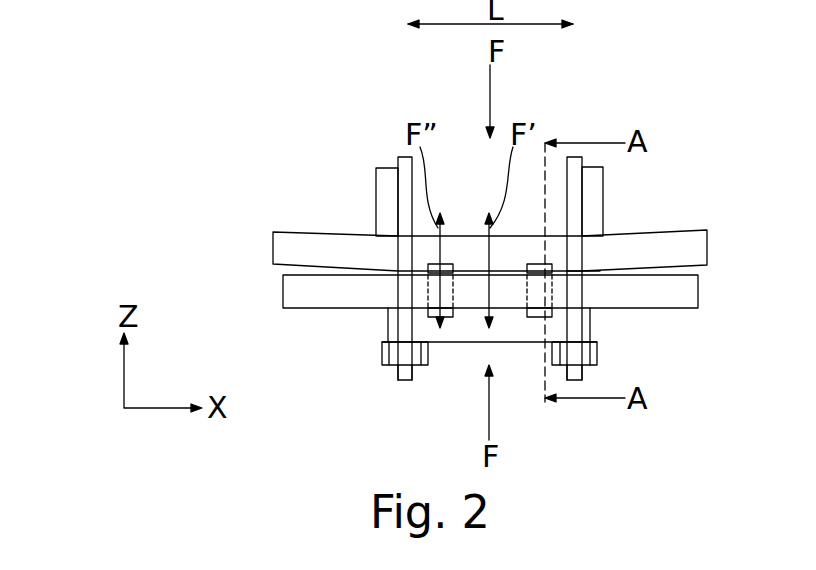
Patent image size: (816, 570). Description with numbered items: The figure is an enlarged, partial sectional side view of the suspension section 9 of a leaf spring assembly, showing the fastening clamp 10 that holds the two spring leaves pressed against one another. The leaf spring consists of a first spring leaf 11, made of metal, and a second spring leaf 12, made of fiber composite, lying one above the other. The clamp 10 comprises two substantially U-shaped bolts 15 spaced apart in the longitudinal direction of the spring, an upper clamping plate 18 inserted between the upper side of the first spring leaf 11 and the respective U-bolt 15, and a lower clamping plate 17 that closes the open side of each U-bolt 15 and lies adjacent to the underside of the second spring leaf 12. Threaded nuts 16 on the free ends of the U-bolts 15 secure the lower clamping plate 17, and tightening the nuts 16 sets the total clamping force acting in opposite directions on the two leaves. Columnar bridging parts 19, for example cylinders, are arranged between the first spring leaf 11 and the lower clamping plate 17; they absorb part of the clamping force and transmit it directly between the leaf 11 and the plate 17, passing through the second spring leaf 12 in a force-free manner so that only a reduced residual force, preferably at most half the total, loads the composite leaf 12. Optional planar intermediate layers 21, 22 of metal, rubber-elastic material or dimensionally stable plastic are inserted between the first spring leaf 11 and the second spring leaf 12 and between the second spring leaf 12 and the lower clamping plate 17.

The suspension section 9 is at (338, 216).
The clamp 10 is at (605, 106).
The first spring leaf 11 is at (285, 247).
The second spring leaf 12 is at (290, 292).
The U-shaped bolt 15 is at (398, 161).
The threaded nut 16 is at (385, 358).
The lower clamping plate 17 is at (515, 333).
The upper clamping plate 18 is at (385, 197).
The bridging part 19 is at (450, 302).
The intermediate layer 21 is at (588, 270).
The intermediate layer 22 is at (393, 314).